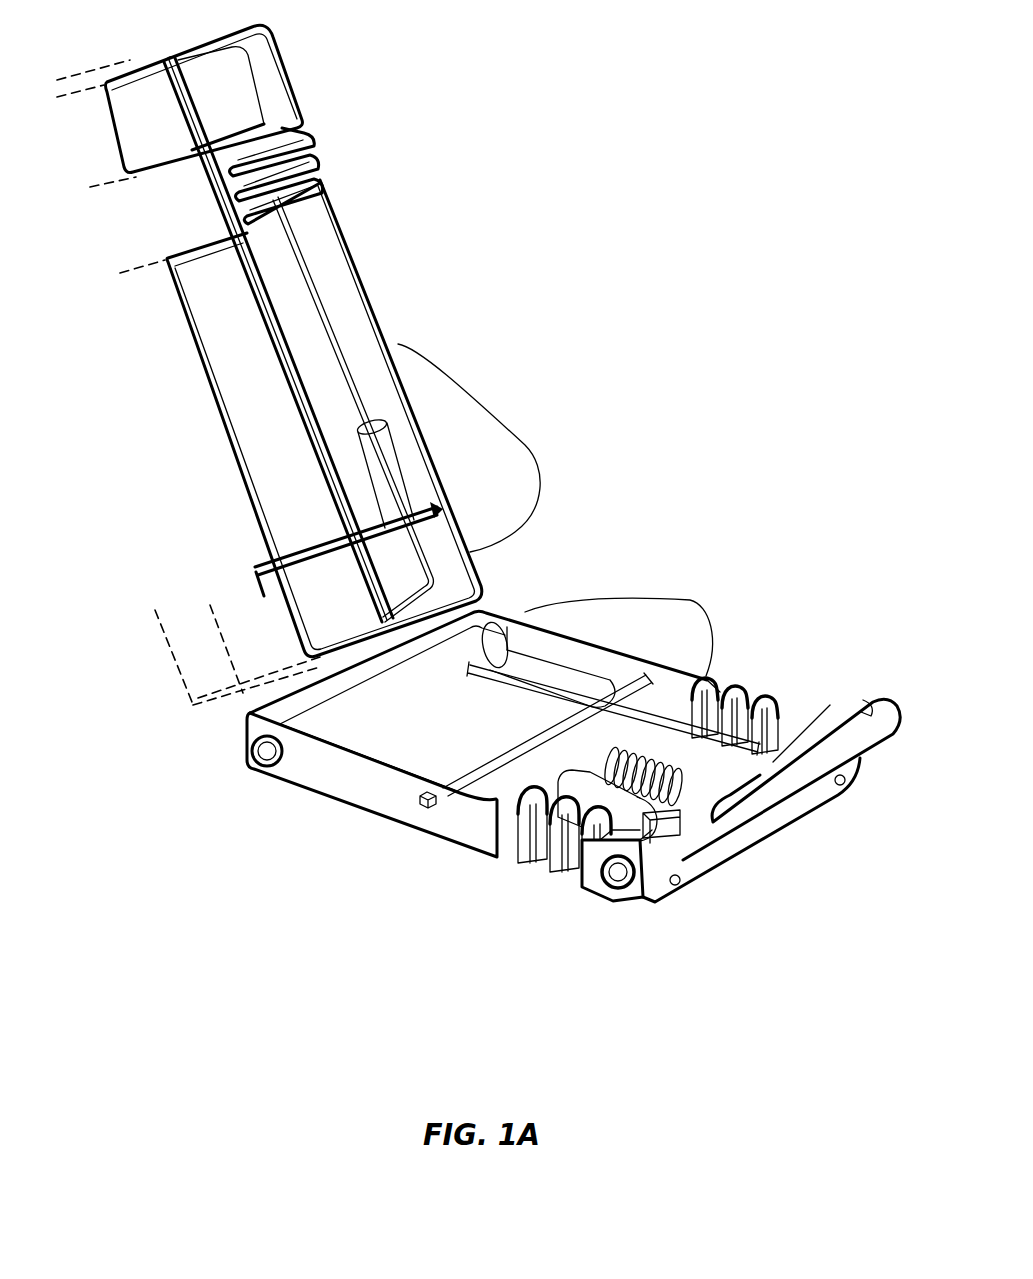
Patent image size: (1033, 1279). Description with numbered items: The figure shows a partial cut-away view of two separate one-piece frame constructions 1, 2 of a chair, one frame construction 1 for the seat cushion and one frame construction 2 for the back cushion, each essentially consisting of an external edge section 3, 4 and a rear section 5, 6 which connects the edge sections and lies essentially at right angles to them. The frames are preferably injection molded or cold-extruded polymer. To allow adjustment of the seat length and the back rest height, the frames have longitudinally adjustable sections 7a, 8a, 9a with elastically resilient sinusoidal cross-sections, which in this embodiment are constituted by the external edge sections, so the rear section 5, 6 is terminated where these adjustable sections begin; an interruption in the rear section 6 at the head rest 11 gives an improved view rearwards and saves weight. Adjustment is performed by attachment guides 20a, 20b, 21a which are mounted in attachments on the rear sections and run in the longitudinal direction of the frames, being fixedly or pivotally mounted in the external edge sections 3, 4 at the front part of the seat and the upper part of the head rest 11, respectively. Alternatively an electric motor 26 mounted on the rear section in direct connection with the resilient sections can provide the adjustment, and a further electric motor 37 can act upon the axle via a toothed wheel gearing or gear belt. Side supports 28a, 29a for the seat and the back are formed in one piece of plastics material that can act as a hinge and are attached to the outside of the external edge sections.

The frame construction 1 is at (573, 739).
The frame construction 2 is at (353, 418).
The external edge section 3 is at (317, 787).
The external edge section 4 is at (360, 262).
The rear section 5 is at (458, 750).
The rear section 6 is at (261, 414).
The longitudinally adjustable section 7a is at (524, 862).
The longitudinally adjustable section 8a is at (743, 690).
The longitudinally adjustable section 9a is at (317, 160).
The head rest 11 is at (290, 78).
The attachment guide 20a is at (503, 640).
The attachment guide 20b is at (680, 882).
The attachment guide 21a is at (203, 174).
The electric motor 26 is at (610, 797).
The side support 28a is at (691, 643).
The side support 29a is at (504, 493).
The electric motor 37 is at (565, 660).